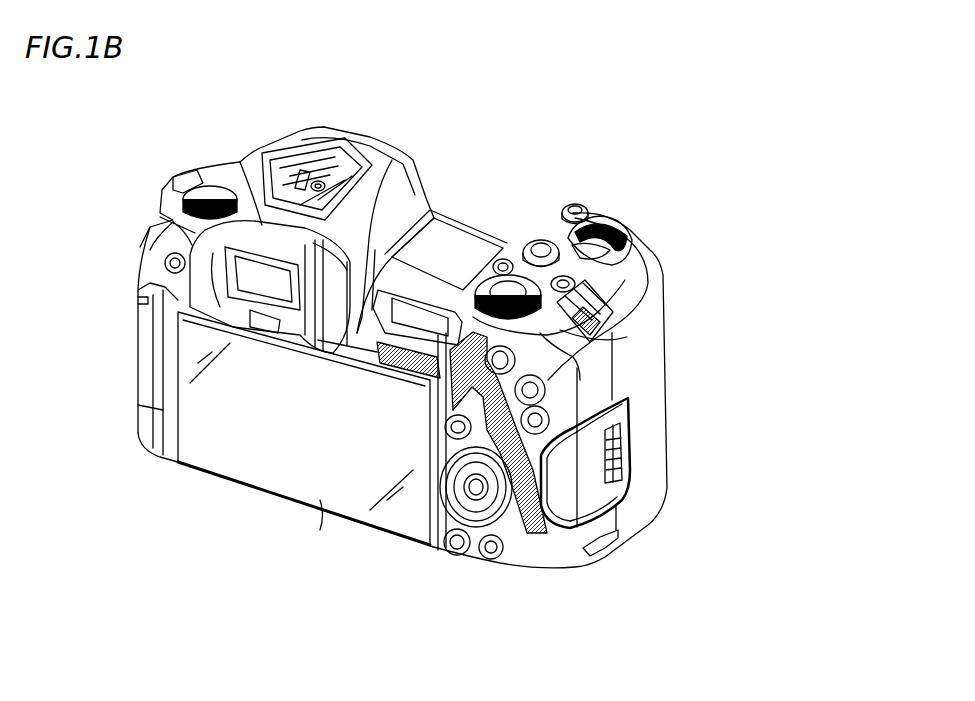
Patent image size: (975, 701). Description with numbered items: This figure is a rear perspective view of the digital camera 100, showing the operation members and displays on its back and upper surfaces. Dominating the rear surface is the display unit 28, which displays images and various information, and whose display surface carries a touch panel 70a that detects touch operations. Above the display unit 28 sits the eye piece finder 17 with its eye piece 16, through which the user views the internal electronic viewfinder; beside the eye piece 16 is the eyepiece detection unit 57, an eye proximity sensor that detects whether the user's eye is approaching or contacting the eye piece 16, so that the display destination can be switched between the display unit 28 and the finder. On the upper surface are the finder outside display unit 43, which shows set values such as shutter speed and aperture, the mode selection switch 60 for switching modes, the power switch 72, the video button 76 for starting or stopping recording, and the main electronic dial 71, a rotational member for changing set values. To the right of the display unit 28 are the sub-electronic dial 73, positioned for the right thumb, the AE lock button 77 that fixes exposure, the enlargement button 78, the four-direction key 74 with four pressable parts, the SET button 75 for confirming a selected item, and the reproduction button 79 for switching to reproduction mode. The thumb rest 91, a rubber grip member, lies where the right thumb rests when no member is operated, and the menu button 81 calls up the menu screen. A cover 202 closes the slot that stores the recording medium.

The digital camera 100 is at (618, 162).
The eye piece finder 17 is at (413, 163).
The eye piece 16 is at (255, 270).
The power switch 72 is at (212, 186).
The menu button 81 is at (165, 265).
The eyepiece detection unit 57 is at (150, 313).
The display unit 28 is at (304, 438).
The touch panel 70a is at (270, 462).
The finder outside display unit 43 is at (455, 240).
The mode selection switch 60 is at (505, 290).
The video button 76 is at (542, 240).
The main electronic dial 71 is at (587, 205).
The sub-electronic dial 73 is at (628, 262).
The thumb rest 91 is at (627, 337).
The AE lock button 77 is at (547, 380).
The enlargement button 78 is at (550, 418).
The cover 202 is at (597, 482).
The four-direction key 74 is at (527, 547).
The SET button 75 is at (430, 525).
The reproduction button 79 is at (457, 557).